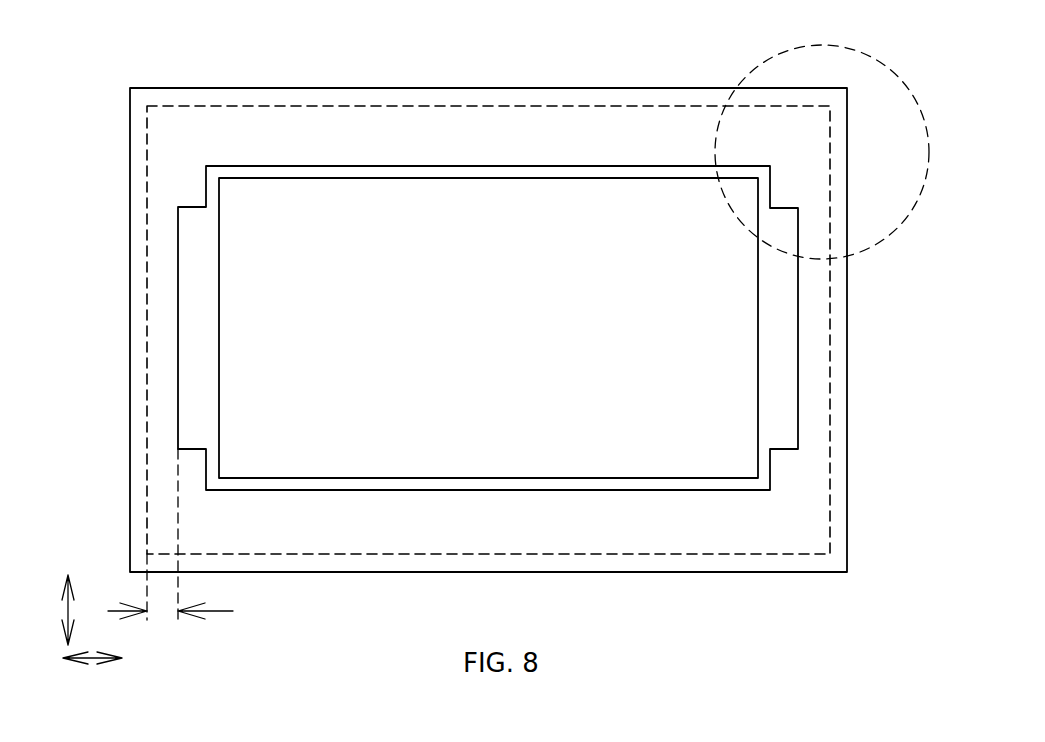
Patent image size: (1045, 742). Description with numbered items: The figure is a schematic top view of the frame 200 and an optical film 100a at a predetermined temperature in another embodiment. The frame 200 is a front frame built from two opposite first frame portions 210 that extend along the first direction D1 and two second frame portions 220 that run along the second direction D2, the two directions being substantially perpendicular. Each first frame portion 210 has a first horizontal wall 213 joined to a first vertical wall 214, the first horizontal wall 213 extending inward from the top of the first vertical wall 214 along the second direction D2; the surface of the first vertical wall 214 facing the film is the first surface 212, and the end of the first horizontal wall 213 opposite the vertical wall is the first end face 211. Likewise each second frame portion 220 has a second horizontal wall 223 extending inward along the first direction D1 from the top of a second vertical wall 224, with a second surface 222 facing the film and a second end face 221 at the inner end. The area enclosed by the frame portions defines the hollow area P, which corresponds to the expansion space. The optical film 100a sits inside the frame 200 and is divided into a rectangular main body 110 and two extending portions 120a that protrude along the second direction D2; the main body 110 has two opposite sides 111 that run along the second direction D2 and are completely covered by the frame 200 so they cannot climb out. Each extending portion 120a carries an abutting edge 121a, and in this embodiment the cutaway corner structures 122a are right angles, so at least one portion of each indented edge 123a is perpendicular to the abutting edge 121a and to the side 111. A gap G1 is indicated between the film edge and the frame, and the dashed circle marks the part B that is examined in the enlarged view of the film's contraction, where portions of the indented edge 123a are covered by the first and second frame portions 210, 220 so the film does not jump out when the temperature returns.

The optical film 100a is at (490, 448).
The main body 110 is at (628, 448).
The side 111 is at (379, 165).
The extending portion 120a is at (777, 372).
The abutting edge 121a is at (800, 330).
The cutaway corner structure 122a is at (801, 179).
The indented edge 123a is at (788, 207).
The frame 200 is at (319, 143).
The first frame portion 210 is at (688, 447).
The first end face 211 is at (220, 328).
The first surface 212 is at (147, 305).
The first horizontal wall 213 is at (820, 397).
The first vertical wall 214 is at (838, 433).
The second frame portion 220 is at (620, 58).
The second end face 221 is at (487, 178).
The second surface 222 is at (450, 105).
The second horizontal wall 223 is at (527, 143).
The second vertical wall 224 is at (582, 106).
The hollow area P is at (772, 167).
The part B is at (903, 223).
The gap G1 is at (178, 534).
The first direction D1 is at (71, 595).
The second direction D2 is at (112, 659).